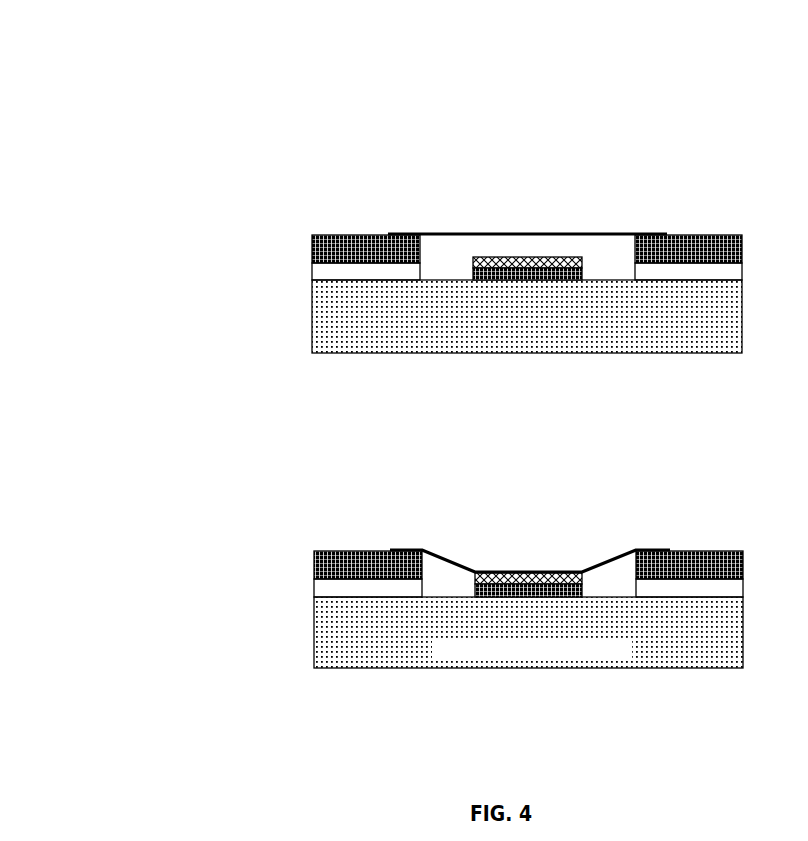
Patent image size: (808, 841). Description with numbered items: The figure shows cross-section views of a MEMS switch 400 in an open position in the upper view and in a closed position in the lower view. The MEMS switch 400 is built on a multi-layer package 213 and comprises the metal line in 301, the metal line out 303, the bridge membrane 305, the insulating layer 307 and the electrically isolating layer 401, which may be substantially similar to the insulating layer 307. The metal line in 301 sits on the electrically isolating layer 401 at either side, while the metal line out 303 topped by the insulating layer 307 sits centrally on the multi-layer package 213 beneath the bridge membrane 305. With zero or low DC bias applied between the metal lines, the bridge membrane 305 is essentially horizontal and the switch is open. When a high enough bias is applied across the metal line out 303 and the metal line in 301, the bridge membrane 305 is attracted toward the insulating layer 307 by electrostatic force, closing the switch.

The MEMS switch 400 is at (124, 108).
The metal line in 301 is at (348, 551).
The bridge membrane 305 is at (453, 562).
The insulating layer 307 is at (475, 576).
The metal line out 303 is at (582, 590).
The electrically isolating layer 401 is at (314, 583).
The multi-layer package 213 is at (628, 659).